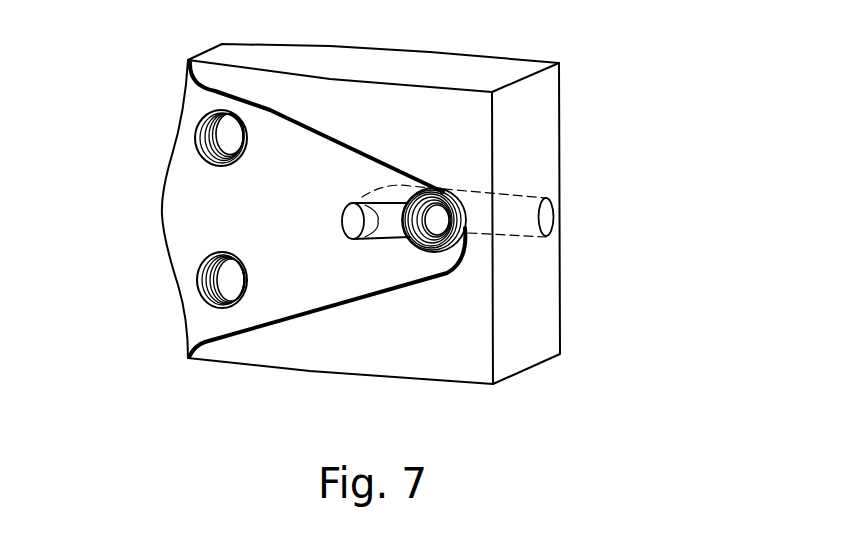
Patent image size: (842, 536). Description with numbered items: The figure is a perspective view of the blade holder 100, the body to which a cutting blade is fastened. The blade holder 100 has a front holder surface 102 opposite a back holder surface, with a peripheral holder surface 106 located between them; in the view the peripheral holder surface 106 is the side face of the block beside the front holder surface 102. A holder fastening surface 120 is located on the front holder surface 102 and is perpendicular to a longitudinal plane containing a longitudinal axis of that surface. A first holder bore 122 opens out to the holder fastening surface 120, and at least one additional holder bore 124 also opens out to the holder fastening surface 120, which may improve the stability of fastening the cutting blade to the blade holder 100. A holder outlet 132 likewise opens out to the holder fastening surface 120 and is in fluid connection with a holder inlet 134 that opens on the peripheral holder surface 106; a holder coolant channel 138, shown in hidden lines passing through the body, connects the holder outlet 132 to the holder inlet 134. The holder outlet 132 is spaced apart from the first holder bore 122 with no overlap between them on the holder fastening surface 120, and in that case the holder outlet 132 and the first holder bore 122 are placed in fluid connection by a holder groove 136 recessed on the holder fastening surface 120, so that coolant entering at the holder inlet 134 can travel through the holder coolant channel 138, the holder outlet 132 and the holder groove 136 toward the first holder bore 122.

The blade holder 100 is at (376, 222).
The front holder surface 102 is at (465, 357).
The peripheral holder surface 106 is at (548, 318).
The holder fastening surface 120 is at (188, 175).
The first holder bore 122 is at (422, 268).
The additional holder bore 124 is at (188, 112).
The holder outlet 132 is at (355, 217).
The holder inlet 134 is at (563, 223).
The holder groove 136 is at (382, 252).
The holder coolant channel 138 is at (517, 193).